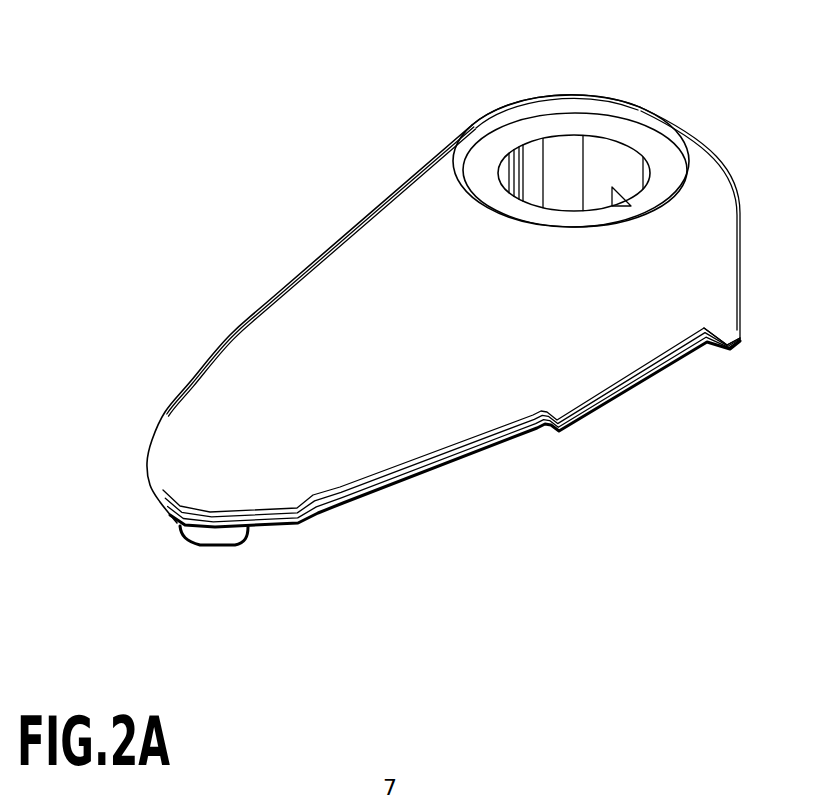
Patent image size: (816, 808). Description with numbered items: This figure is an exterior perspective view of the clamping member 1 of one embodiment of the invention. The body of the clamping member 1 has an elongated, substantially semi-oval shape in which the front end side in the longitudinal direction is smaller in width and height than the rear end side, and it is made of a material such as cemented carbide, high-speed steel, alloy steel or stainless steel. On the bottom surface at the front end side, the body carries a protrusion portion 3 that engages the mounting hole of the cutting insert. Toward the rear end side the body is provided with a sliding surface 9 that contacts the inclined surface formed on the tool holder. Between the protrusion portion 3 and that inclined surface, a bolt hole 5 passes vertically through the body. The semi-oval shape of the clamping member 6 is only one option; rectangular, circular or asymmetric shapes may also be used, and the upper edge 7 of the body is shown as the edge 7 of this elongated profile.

The clamping member 1 is at (464, 343).
The protrusion portion 3 is at (193, 555).
The bolt hole 5 is at (593, 167).
The clamping member 6 is at (607, 342).
The upper edge 7 is at (280, 320).
The sliding surface 9 is at (720, 345).